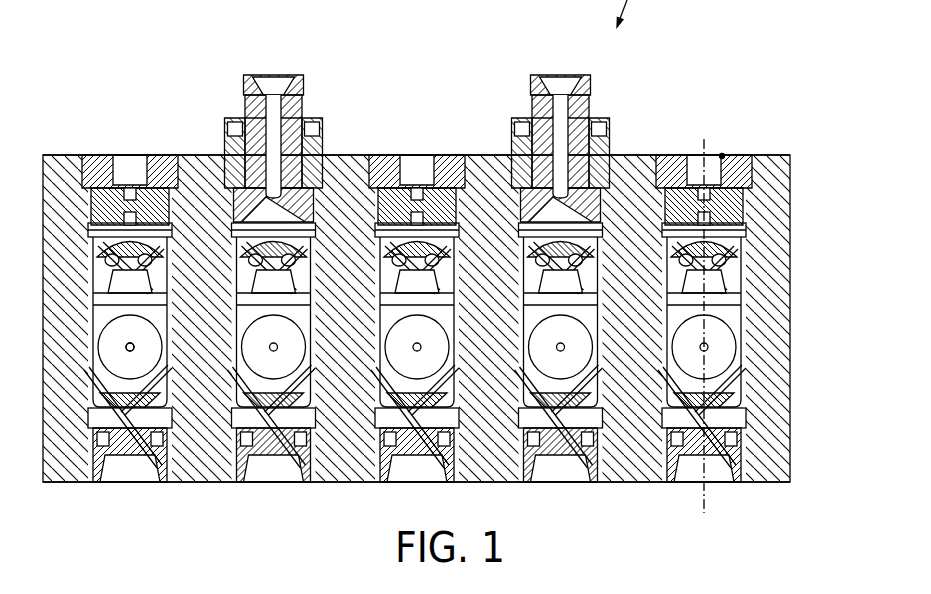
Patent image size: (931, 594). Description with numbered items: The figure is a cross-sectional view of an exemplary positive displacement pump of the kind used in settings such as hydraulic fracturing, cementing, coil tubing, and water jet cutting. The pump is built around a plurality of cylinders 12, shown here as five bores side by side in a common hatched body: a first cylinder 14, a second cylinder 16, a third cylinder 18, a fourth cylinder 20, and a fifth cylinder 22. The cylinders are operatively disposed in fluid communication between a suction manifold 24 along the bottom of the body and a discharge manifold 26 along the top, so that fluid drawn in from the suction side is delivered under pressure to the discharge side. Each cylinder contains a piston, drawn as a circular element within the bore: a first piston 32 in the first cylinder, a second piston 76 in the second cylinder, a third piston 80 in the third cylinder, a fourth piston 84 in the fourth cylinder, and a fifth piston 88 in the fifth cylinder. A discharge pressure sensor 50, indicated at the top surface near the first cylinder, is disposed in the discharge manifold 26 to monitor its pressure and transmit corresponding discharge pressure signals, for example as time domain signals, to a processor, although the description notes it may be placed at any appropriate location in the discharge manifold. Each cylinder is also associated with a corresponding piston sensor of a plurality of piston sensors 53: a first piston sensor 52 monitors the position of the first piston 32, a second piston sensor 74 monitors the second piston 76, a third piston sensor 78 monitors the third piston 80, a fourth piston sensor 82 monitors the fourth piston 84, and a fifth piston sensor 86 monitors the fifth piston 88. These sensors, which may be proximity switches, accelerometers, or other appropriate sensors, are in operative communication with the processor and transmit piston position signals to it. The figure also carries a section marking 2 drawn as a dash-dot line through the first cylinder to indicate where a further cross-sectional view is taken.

The section line 2- 2 is at (690, 513).
The plurality of cylinders 12 is at (776, 284).
The first cylinder 14 is at (727, 318).
The second cylinder 16 is at (584, 278).
The third cylinder 18 is at (440, 318).
The fourth cylinder 20 is at (297, 278).
The fifth cylinder 22 is at (153, 318).
The suction manifold 24 is at (720, 476).
The discharge manifold 26 is at (737, 155).
The first piston 32 is at (725, 337).
The discharge pressure sensor 50 is at (723, 155).
The first piston sensor 52 is at (749, 338).
The plurality of piston sensors 53 is at (130, 347).
The second piston sensor 74 is at (606, 338).
The second piston 76 is at (581, 337).
The third piston sensor 78 is at (462, 338).
The third piston 80 is at (437, 337).
The fourth piston sensor 82 is at (319, 338).
The fourth piston 84 is at (294, 337).
The fifth piston sensor 86 is at (175, 338).
The fifth piston 88 is at (150, 337).